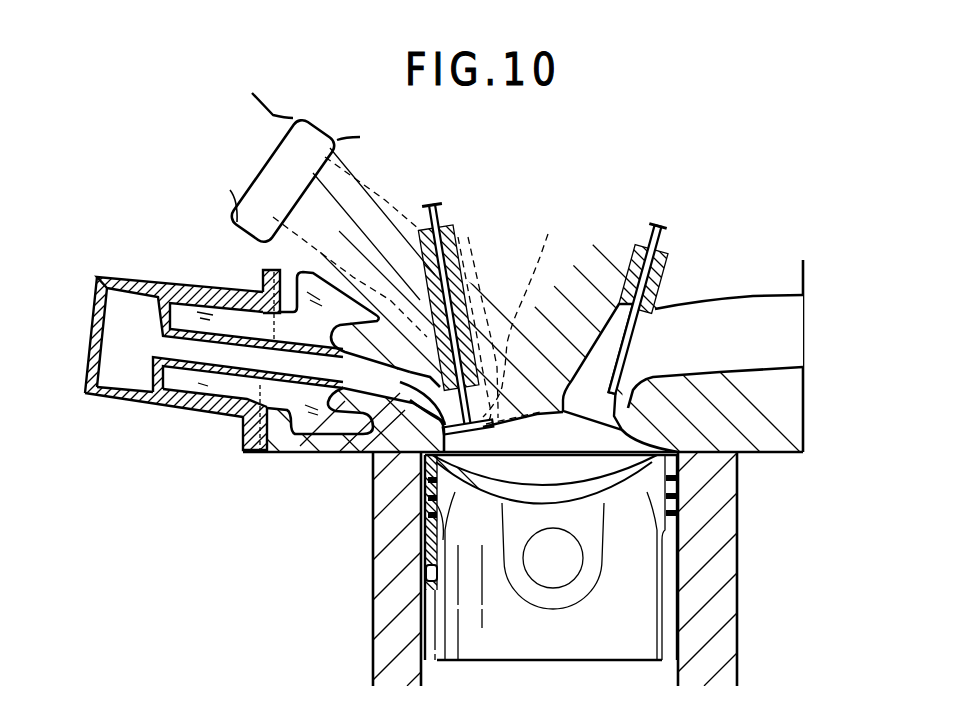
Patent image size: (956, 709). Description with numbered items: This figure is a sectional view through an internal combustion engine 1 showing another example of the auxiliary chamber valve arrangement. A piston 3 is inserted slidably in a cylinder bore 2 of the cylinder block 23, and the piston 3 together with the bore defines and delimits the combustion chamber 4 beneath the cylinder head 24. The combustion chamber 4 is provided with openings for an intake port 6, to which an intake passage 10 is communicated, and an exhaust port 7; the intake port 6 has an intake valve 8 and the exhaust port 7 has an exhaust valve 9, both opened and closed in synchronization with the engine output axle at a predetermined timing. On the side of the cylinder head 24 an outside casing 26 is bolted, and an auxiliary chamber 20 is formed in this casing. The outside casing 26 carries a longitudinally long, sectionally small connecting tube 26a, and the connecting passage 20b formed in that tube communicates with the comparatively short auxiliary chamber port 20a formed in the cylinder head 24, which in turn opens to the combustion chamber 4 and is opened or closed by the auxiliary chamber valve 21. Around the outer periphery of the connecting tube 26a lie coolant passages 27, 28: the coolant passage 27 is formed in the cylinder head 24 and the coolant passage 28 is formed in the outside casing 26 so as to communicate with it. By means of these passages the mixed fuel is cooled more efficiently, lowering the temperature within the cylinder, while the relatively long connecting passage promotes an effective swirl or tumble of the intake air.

The internal combustion engine 1 is at (561, 569).
The cylinder bore 2 is at (427, 584).
The piston 3 is at (338, 445).
The combustion chamber 4 is at (508, 460).
The intake port 6 is at (519, 311).
The exhaust port 7 is at (787, 330).
The intake valve 8 is at (478, 270).
The exhaust valve 9 is at (624, 343).
The intake passage 10 is at (272, 114).
The auxiliary chamber 20 is at (107, 383).
The auxiliary chamber port 20a is at (413, 387).
The connecting passage 20b is at (230, 362).
The auxiliary chamber valve 21 is at (403, 457).
The cylinder block 23 is at (730, 627).
The cylinder head 24 is at (793, 397).
The outside casing 26 is at (107, 276).
The connecting tube 26a is at (167, 407).
The coolant passage 27 is at (270, 290).
The coolant passage 28 is at (187, 312).